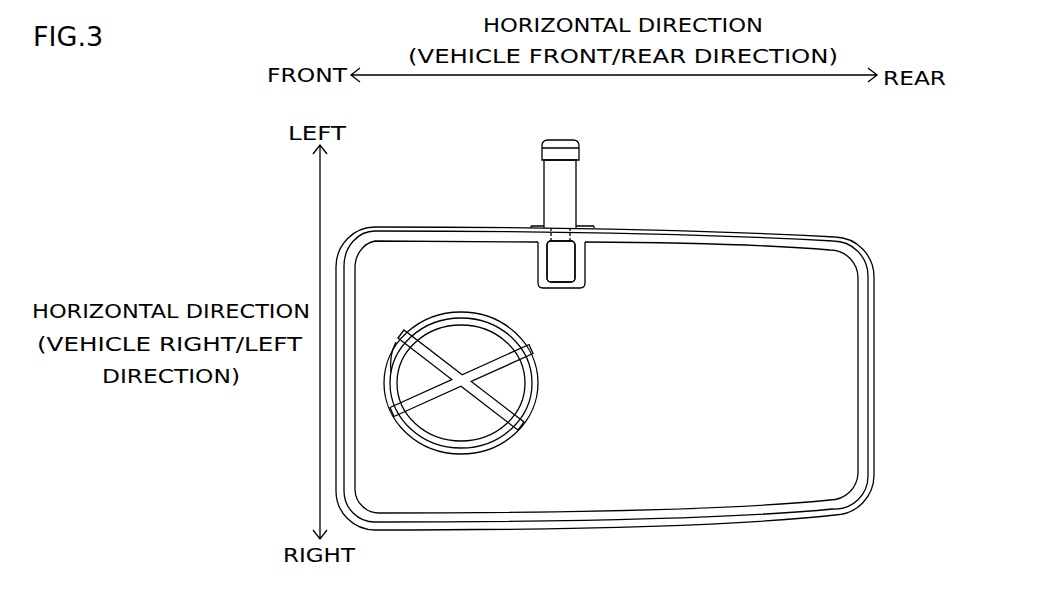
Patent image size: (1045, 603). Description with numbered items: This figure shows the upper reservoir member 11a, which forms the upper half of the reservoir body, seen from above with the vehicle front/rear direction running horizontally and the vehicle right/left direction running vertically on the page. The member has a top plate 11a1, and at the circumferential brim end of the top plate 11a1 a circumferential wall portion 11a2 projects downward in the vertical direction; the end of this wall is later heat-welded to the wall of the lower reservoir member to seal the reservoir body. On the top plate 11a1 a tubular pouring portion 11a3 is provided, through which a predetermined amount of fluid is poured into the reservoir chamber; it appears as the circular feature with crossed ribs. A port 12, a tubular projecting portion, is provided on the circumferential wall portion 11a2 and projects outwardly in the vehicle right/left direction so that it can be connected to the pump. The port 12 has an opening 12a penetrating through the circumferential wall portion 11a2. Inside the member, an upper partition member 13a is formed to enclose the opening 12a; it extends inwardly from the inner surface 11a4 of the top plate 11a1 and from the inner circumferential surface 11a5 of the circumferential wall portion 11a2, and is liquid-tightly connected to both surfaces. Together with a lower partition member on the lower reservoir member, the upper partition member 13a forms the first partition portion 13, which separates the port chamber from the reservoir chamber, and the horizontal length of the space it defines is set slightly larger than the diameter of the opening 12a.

The upper reservoir member 11a is at (800, 207).
The top plate 11a1 is at (845, 343).
The circumferential wall portion 11a2 is at (702, 228).
The tubular pouring portion 11a3 is at (528, 403).
The inner surface 11a4 is at (516, 273).
The inner circumferential surface 11a5 is at (620, 242).
The port 12 is at (544, 180).
The opening 12a is at (564, 238).
The first partition portion 13 is at (561, 261).
The upper partition member 13a is at (566, 290).